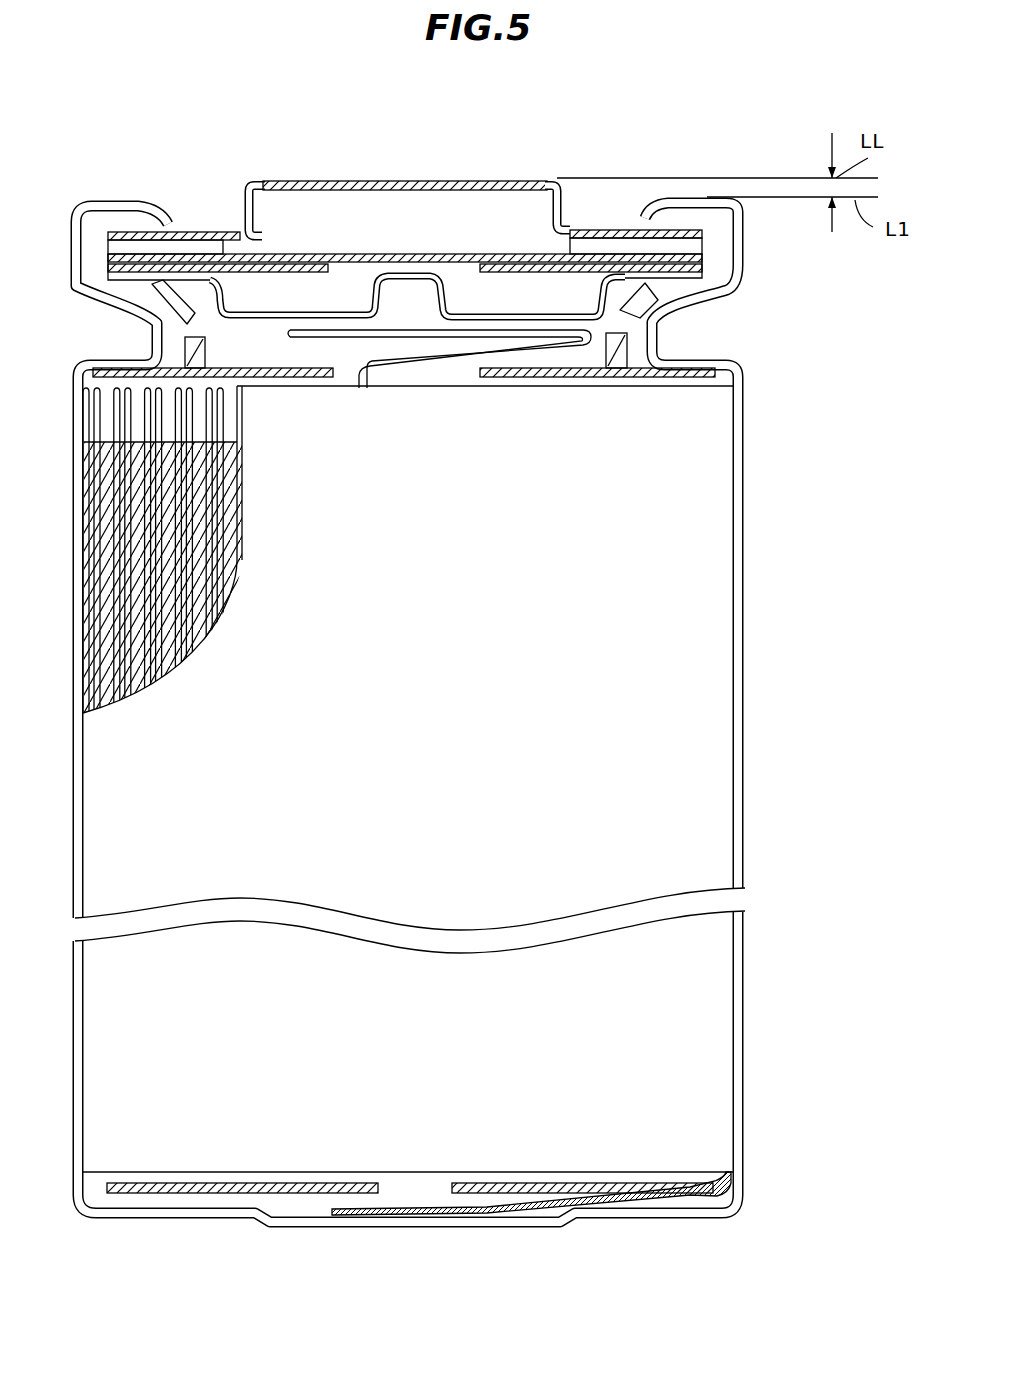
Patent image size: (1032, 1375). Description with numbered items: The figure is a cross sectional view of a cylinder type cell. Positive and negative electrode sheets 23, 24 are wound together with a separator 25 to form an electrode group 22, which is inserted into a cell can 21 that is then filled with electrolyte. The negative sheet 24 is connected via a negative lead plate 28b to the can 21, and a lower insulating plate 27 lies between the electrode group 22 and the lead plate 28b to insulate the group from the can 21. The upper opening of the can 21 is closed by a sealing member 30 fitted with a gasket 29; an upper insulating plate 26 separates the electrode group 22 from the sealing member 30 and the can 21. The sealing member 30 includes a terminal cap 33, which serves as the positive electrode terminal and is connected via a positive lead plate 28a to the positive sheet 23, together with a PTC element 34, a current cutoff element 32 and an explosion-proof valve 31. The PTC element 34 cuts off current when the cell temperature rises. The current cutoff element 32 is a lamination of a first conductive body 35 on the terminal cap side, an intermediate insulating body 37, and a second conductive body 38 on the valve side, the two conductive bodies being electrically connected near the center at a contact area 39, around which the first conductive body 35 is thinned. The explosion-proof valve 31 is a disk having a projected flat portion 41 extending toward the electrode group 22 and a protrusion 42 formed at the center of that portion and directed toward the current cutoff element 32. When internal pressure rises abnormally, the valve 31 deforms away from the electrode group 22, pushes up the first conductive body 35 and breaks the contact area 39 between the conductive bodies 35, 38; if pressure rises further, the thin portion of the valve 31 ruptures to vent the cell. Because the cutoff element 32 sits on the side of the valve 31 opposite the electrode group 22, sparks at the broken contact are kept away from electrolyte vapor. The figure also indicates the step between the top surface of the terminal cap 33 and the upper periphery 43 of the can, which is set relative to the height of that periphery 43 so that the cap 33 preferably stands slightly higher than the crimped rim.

The cell can 21 is at (745, 487).
The electrode group 22 is at (705, 612).
The positive sheet 23 is at (233, 480).
The negative sheet 24 is at (213, 578).
The separator 25 is at (225, 407).
The upper insulating plate 26 is at (617, 380).
The lower insulating plate 27 is at (610, 1187).
The positive lead plate 28a is at (417, 363).
The negative lead plate 28b is at (527, 1200).
The gasket 29 is at (720, 257).
The sealing member 30 is at (566, 201).
The explosion-proof valve 31 is at (160, 323).
The current cutoff element 32 is at (452, 256).
The terminal cap 33 is at (305, 182).
The PTC element 34 is at (173, 245).
The first conductive body 35 is at (205, 252).
The intermediate insulating body 37 is at (567, 255).
The second conductive body 38 is at (297, 275).
The contact area 39 is at (517, 272).
The projected flat portion 41 is at (267, 318).
The protrusion 42 is at (407, 285).
The upper periphery of the can 43 is at (107, 203).